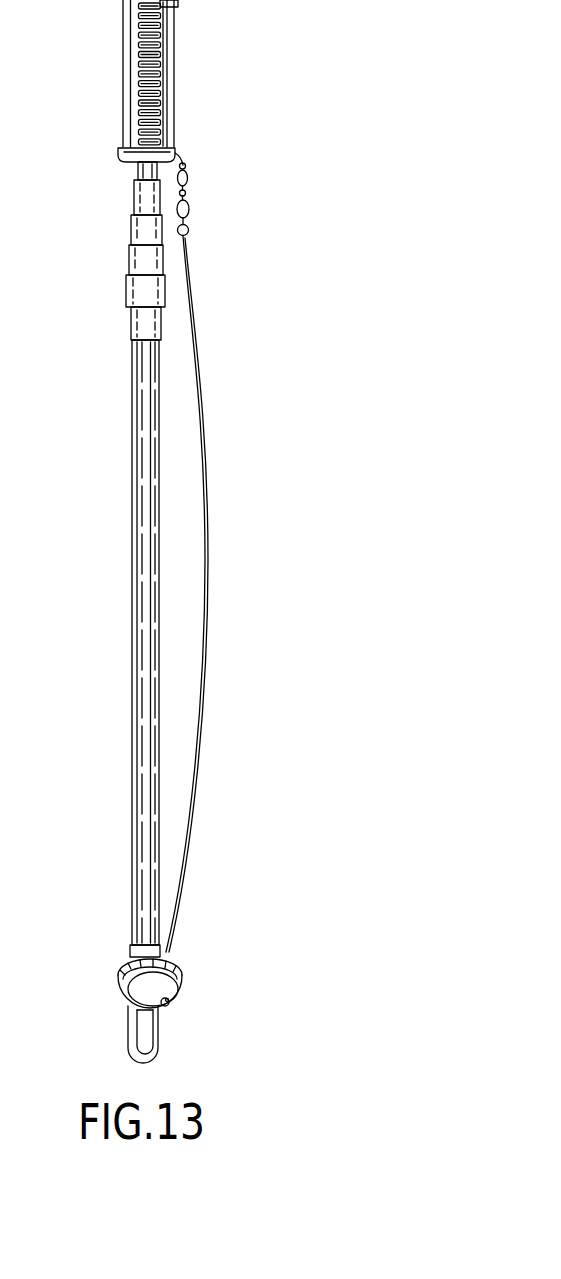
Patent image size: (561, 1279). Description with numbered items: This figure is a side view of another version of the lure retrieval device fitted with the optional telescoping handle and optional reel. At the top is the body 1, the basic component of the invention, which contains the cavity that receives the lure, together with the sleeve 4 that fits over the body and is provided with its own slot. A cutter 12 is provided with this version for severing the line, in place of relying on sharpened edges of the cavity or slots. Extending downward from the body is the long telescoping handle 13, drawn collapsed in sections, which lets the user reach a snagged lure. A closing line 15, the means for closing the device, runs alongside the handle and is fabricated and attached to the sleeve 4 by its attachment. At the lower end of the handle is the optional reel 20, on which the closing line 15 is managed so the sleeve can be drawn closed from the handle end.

The body 1 is at (169, 115).
The sleeve 4 is at (122, 93).
The cutter 12 is at (160, 52).
The telescoping handle 13 is at (133, 588).
The closing line 15 is at (201, 392).
The reel 20 is at (183, 975).